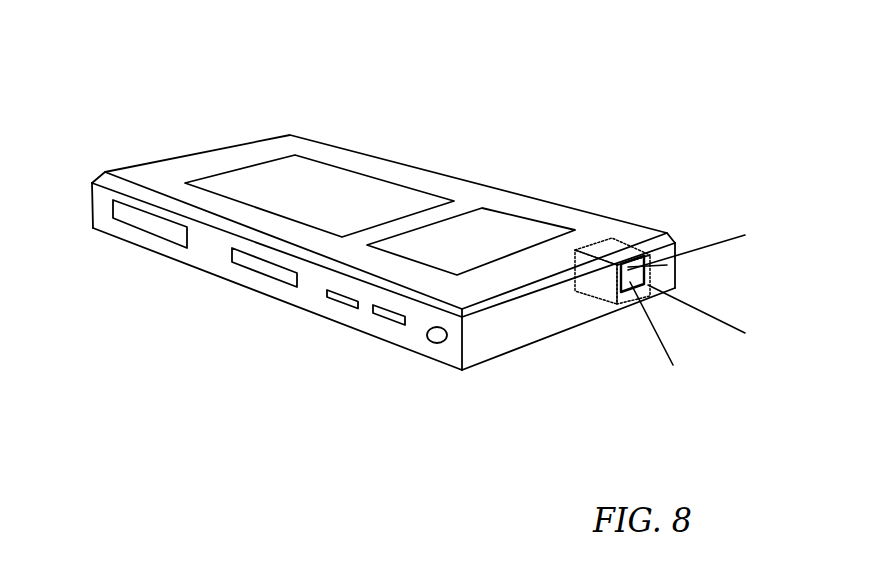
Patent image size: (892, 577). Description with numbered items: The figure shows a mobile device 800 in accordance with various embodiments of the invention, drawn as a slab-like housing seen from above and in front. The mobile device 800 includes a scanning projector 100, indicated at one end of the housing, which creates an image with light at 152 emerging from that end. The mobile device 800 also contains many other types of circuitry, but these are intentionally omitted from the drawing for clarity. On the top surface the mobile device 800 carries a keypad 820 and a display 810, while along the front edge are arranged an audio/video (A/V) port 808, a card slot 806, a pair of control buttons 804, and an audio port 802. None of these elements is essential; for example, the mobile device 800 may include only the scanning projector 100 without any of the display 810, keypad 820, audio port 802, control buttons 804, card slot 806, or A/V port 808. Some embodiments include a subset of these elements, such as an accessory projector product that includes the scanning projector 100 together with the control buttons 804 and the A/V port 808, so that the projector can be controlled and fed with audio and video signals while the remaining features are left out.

The mobile device 800 is at (697, 91).
The keypad 820 is at (330, 182).
The display 810 is at (482, 222).
The audio/video (A/V) port 808 is at (133, 222).
The card slot 806 is at (253, 267).
The control buttons 804 is at (378, 316).
The audio port 802 is at (436, 343).
The scanning projector 100 is at (613, 245).
The light 152 is at (692, 300).